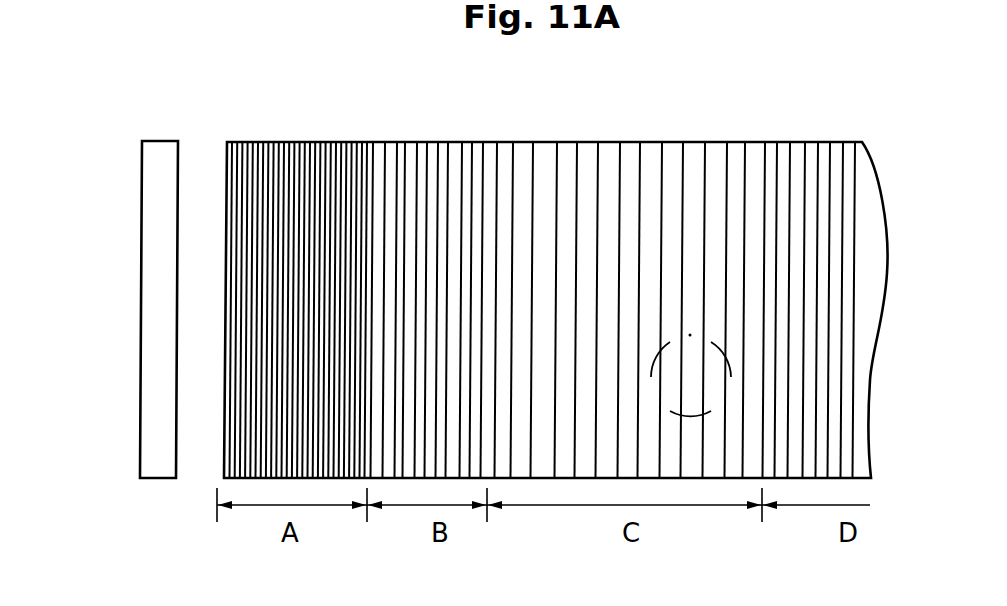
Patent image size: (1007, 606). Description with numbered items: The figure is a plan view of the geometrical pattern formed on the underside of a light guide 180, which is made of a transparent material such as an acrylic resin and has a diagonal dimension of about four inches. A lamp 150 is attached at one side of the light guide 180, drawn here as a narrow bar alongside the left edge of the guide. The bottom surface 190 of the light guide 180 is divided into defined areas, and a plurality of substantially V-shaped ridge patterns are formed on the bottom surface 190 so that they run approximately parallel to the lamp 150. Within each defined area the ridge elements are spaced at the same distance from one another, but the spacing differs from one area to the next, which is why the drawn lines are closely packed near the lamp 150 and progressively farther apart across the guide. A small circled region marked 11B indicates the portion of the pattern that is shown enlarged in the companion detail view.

The lamp 150 is at (142, 310).
The light guide 180 is at (433, 143).
The bottom surface 190 is at (759, 153).
The detail region shown in Fig. 11B is at (690, 413).